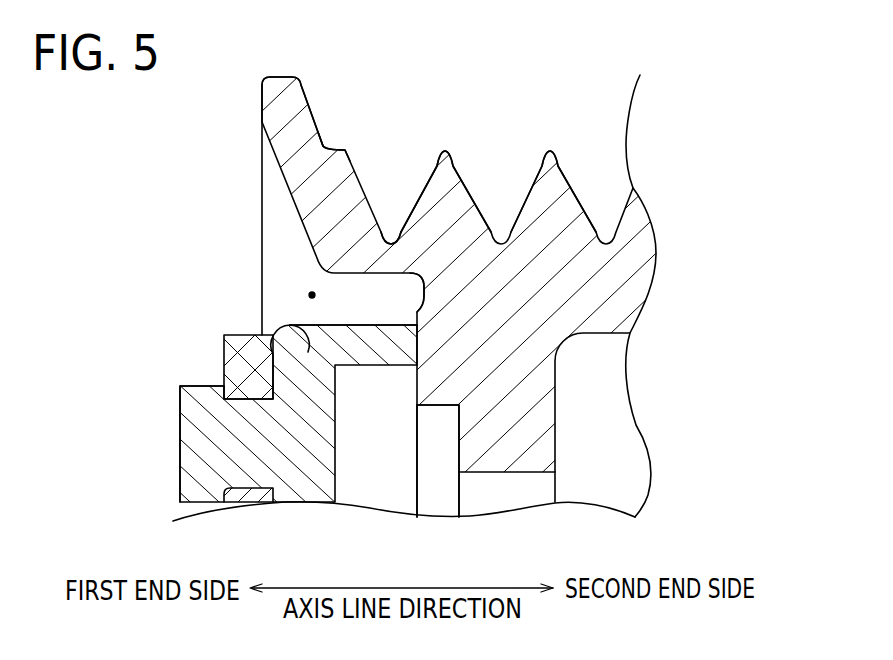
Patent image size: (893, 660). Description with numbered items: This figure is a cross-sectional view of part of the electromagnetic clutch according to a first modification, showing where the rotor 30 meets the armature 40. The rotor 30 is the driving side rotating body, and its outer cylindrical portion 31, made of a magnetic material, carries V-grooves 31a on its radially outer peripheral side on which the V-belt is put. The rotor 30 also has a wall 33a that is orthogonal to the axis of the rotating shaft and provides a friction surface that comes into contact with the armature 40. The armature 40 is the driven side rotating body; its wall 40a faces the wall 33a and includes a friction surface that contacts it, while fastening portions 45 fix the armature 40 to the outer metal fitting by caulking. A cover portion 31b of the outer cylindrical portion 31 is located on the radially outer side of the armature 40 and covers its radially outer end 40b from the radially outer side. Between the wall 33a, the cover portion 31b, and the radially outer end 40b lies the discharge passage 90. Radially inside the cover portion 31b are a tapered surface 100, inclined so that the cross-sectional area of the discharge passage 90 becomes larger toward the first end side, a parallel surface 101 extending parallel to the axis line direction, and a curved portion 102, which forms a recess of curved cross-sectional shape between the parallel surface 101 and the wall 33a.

The rotor 30 is at (598, 287).
The outer cylindrical portion 31 is at (556, 150).
The V-grooves 31a is at (466, 175).
The cover portion 31b is at (277, 126).
The tapered surface 100 is at (322, 150).
The parallel surface 101 is at (385, 247).
The curved portion 102 is at (427, 295).
The armature 40 is at (303, 504).
The wall 40a is at (420, 378).
The radially outer end 40b is at (272, 354).
The fastening portions 45 is at (223, 422).
The wall 33a is at (420, 318).
The discharge passage 90 is at (310, 295).